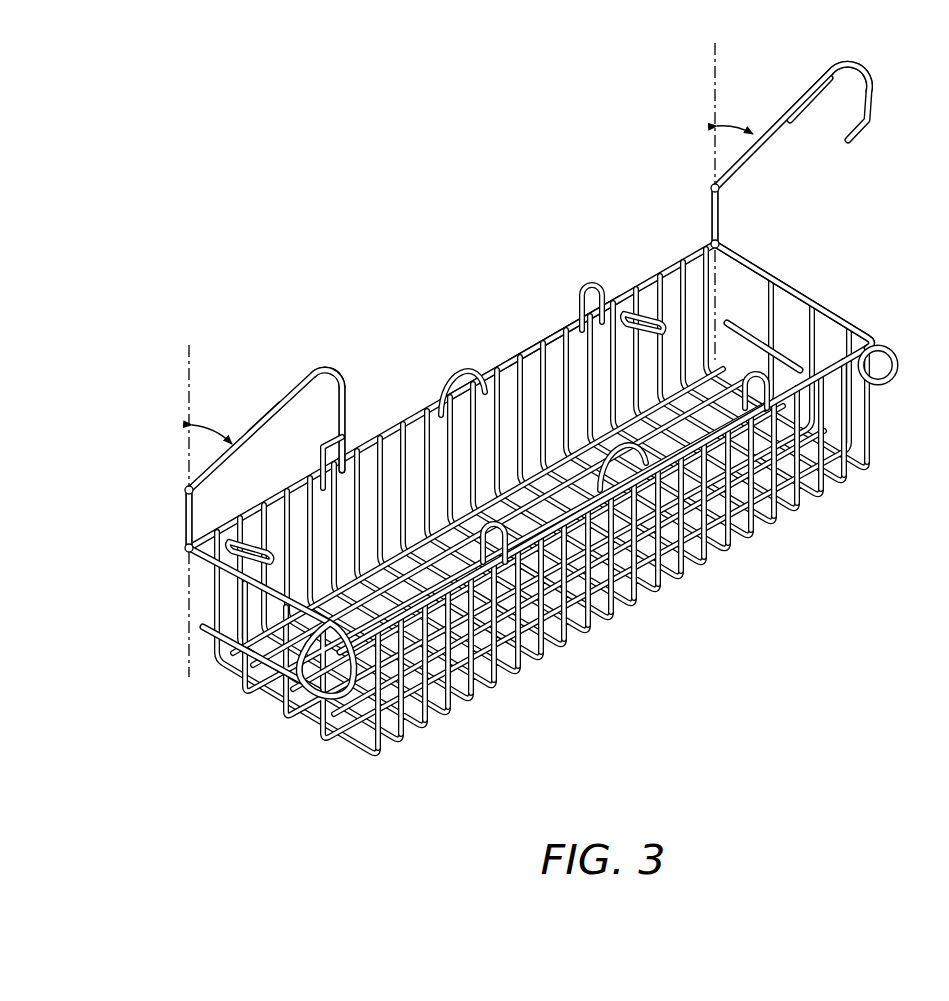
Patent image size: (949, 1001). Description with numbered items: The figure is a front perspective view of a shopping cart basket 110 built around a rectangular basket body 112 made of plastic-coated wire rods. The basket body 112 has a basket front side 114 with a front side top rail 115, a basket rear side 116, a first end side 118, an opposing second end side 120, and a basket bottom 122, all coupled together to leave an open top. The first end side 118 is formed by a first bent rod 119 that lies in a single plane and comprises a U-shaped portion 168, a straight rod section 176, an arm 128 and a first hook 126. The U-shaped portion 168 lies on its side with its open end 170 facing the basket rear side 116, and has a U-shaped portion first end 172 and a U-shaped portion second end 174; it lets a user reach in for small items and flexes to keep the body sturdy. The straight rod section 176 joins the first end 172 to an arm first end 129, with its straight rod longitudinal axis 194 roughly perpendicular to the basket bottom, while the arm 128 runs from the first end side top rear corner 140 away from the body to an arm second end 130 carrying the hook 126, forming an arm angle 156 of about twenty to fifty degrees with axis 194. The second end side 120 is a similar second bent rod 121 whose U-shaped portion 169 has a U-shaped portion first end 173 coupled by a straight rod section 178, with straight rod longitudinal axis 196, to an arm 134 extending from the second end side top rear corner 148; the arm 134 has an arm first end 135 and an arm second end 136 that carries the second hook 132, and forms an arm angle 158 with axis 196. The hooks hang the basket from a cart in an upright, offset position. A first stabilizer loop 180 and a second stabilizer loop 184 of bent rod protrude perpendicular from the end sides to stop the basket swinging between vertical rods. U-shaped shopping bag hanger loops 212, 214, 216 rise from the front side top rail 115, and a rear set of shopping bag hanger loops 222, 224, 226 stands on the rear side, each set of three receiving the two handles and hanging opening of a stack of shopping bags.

The shopping cart basket 110 is at (383, 218).
The basket body 112 is at (385, 422).
The basket front side 114 is at (666, 645).
The front side top rail 115 is at (808, 390).
The basket rear side 116 is at (535, 308).
The first end side 118 is at (218, 705).
The first bent rod 119 is at (266, 383).
The second end side 120 is at (862, 300).
The second bent rod 121 is at (828, 96).
The basket bottom 122 is at (353, 764).
The first hook 126 is at (338, 375).
The arm 128 is at (208, 455).
The arm first end 129 is at (184, 492).
The arm second end 130 is at (312, 368).
The second hook 132 is at (862, 76).
The arm 134 is at (789, 103).
The arm first end 135 is at (711, 190).
The arm second end 136 is at (826, 62).
The first end side top rear corner 140 is at (143, 580).
The second end side top rear corner 148 is at (740, 228).
The arm angle 156 is at (225, 438).
The arm angle 158 is at (750, 130).
The U-shaped portion 168 is at (246, 665).
The U-shaped portion 169 is at (790, 278).
The open end 170 is at (188, 607).
The U-shaped portion first end 172 is at (184, 549).
The U-shaped portion first end 173 is at (711, 243).
The U-shaped portion second end 174 is at (190, 641).
The straight rod section 176 is at (196, 530).
The straight rod section 178 is at (711, 213).
The first stabilizer loop 180 is at (305, 698).
The second stabilizer loop 184 is at (893, 344).
The straight rod longitudinal axis 194 is at (187, 368).
The straight rod longitudinal axis 196 is at (713, 66).
The shopping bag hanger loop 212 is at (494, 522).
The shopping bag hanger loop 214 is at (608, 445).
The shopping bag hanger loop 216 is at (757, 378).
The shopping bag hanger loop 222 is at (318, 452).
The shopping bag hanger loop 224 is at (458, 368).
The shopping bag hanger loop 226 is at (591, 280).